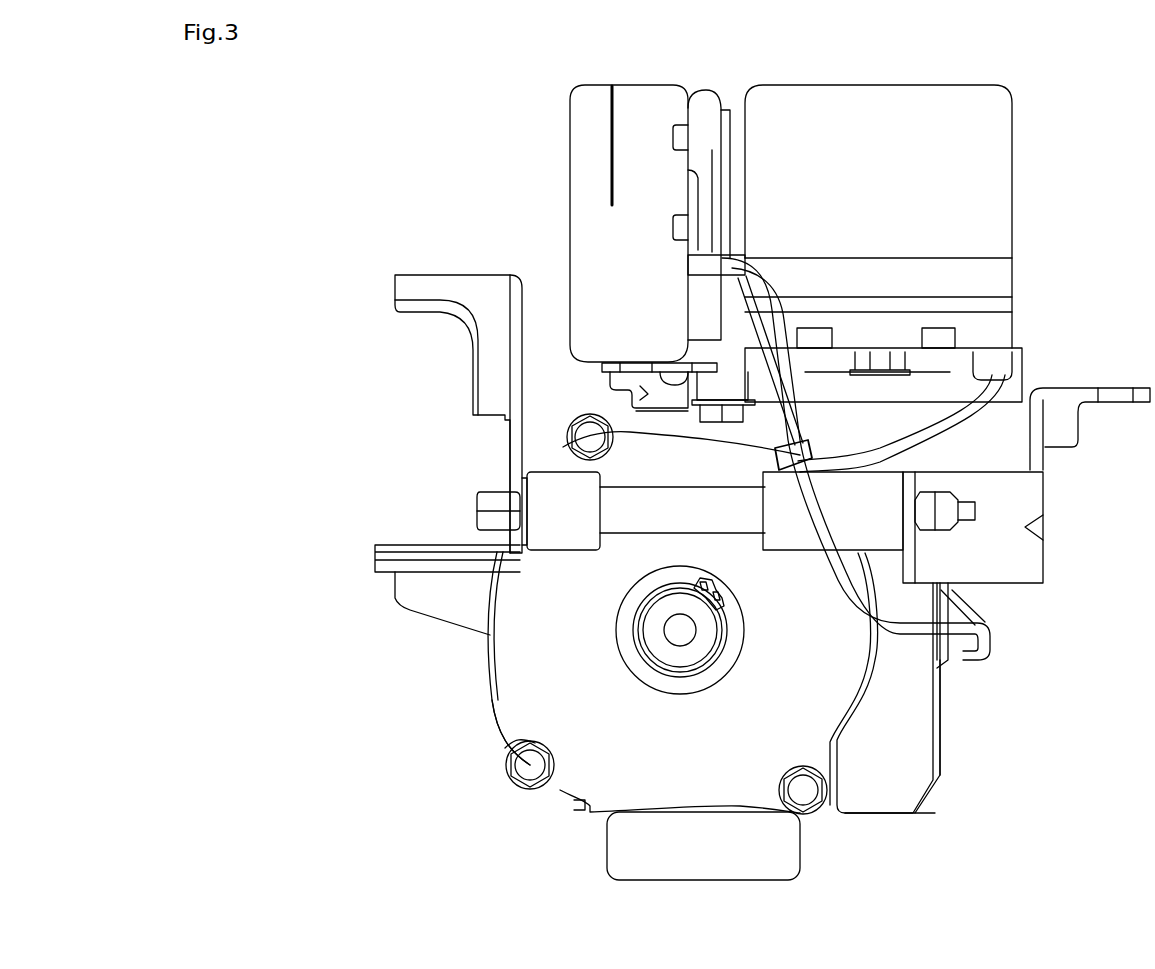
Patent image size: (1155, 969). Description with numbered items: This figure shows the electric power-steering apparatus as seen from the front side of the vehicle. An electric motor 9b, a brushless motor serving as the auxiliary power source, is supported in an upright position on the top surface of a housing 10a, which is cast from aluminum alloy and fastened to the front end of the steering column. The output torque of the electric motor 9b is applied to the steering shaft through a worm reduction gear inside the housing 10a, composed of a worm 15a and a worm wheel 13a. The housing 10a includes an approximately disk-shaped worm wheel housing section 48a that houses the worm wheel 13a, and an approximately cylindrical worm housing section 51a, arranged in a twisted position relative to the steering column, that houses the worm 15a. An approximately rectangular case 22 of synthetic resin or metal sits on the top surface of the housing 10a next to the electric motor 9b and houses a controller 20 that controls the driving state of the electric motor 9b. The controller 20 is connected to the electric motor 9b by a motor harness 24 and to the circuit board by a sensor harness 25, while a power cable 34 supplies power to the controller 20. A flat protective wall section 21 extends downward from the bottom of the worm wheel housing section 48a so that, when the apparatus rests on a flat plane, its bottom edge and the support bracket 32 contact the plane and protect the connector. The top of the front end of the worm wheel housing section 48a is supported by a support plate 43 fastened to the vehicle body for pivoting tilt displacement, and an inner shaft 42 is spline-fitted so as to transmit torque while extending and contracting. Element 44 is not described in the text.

The case 22 is at (632, 130).
The controller (ECU) 20 is at (648, 170).
The electric motor 9b is at (975, 182).
The motor harness 24 is at (968, 405).
The sensor harness 25 is at (900, 630).
The support plate 43 is at (1068, 392).
The support member 44 is at (668, 502).
The housing 10a is at (525, 655).
The inner shaft 42 is at (668, 628).
The worm wheel housing section 48a is at (523, 718).
The worm wheel 13a is at (522, 735).
The support bracket 32 is at (578, 805).
The power cable 34 is at (868, 826).
The protective wall section 21 is at (625, 842).
The worm 15a is at (910, 750).
The worm housing section 51a is at (907, 770).